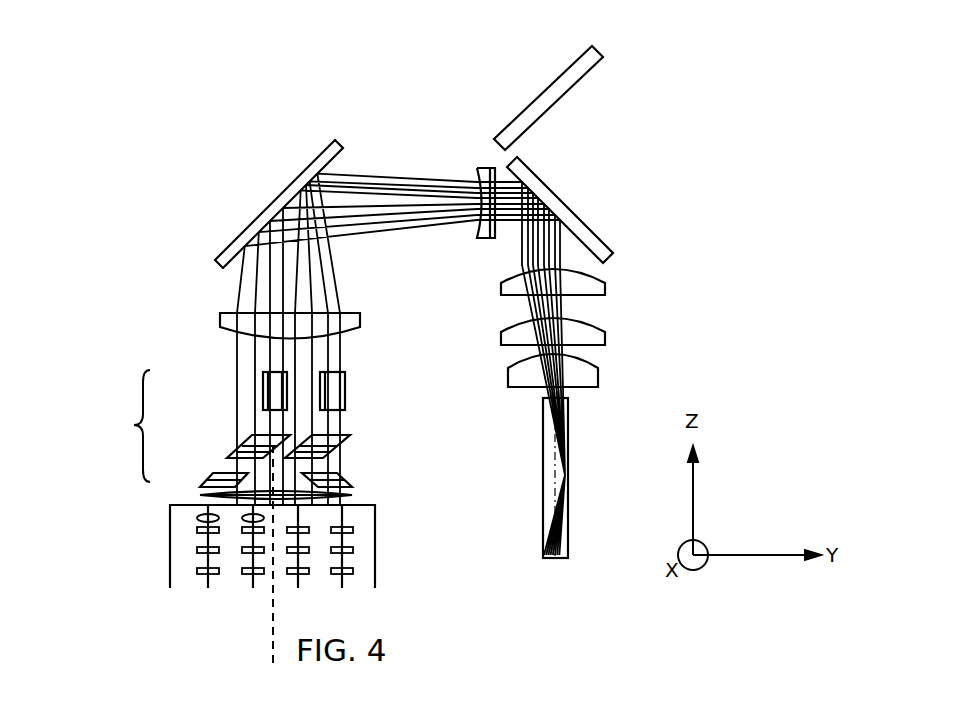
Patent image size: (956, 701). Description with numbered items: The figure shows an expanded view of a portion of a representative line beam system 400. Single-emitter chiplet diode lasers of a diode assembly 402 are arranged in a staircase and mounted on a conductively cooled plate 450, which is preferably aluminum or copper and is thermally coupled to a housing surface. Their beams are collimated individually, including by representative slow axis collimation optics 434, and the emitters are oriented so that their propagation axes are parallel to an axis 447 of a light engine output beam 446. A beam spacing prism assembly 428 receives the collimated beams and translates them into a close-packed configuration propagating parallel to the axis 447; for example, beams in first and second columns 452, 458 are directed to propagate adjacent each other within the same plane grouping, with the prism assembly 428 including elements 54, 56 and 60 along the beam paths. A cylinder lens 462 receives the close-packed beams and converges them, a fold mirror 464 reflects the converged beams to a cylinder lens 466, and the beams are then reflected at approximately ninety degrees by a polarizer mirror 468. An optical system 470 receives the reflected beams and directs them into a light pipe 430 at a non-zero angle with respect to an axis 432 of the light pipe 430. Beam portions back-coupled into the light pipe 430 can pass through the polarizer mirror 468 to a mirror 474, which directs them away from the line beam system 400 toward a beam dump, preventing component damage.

The line beam system 400 is at (699, 154).
The diode assembly 402 is at (281, 538).
The beam spacing prism assembly 428 is at (117, 426).
The light pipe 430 is at (564, 478).
The axis of the light pipe 432 is at (555, 480).
The slow axis collimation optics 434 is at (344, 571).
The light engine output beam 446 is at (200, 496).
The axis of the light engine output beam 447 is at (272, 627).
The conductively cooled plate 450 is at (182, 568).
The first column 452 is at (197, 518).
The second column 458 is at (242, 518).
The cylinder lens 462 is at (220, 320).
The fold mirror 464 is at (257, 218).
The cylinder lens 466 is at (480, 168).
The polarizer mirror 468 is at (565, 202).
The optical system 470 is at (628, 273).
The mirror 474 is at (522, 114).
The prism 54 is at (223, 476).
The prism 56 is at (241, 449).
The beam shaping element 60 is at (263, 388).